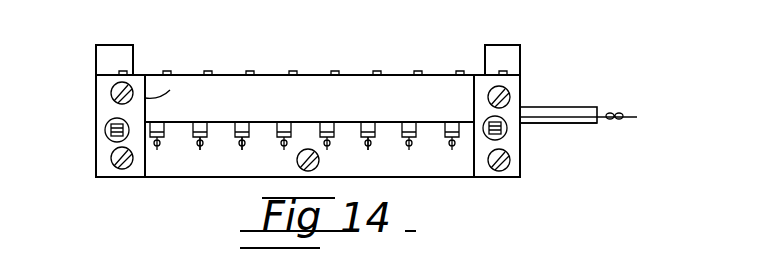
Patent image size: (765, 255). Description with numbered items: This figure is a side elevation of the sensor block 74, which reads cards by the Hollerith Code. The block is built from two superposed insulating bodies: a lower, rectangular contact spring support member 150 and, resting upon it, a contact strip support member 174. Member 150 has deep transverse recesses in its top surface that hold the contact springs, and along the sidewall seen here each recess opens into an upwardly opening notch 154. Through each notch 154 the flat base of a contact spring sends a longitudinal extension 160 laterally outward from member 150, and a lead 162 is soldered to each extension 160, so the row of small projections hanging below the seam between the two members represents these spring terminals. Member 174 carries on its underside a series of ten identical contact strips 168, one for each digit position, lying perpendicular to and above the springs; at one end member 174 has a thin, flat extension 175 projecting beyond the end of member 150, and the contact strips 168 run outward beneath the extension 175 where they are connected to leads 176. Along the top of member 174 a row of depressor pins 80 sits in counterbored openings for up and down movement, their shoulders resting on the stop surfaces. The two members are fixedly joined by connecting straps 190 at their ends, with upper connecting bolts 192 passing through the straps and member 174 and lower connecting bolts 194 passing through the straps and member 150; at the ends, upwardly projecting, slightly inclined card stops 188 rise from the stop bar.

The block 74 is at (273, 73).
The depressor pin 80 is at (376, 70).
The contact spring support member 150 is at (462, 170).
The notch 154 is at (238, 122).
The longitudinal extension 160 is at (238, 140).
The lead 162 is at (370, 150).
The contact strip 168 is at (563, 123).
The contact strip support member 174 is at (405, 95).
The extension 175 is at (578, 107).
The lead 176 is at (622, 118).
The card stop 188 is at (96, 58).
The connecting strap 190 is at (147, 97).
The upper connecting bolt 192 is at (126, 90).
The lower connecting bolt 194 is at (110, 157).